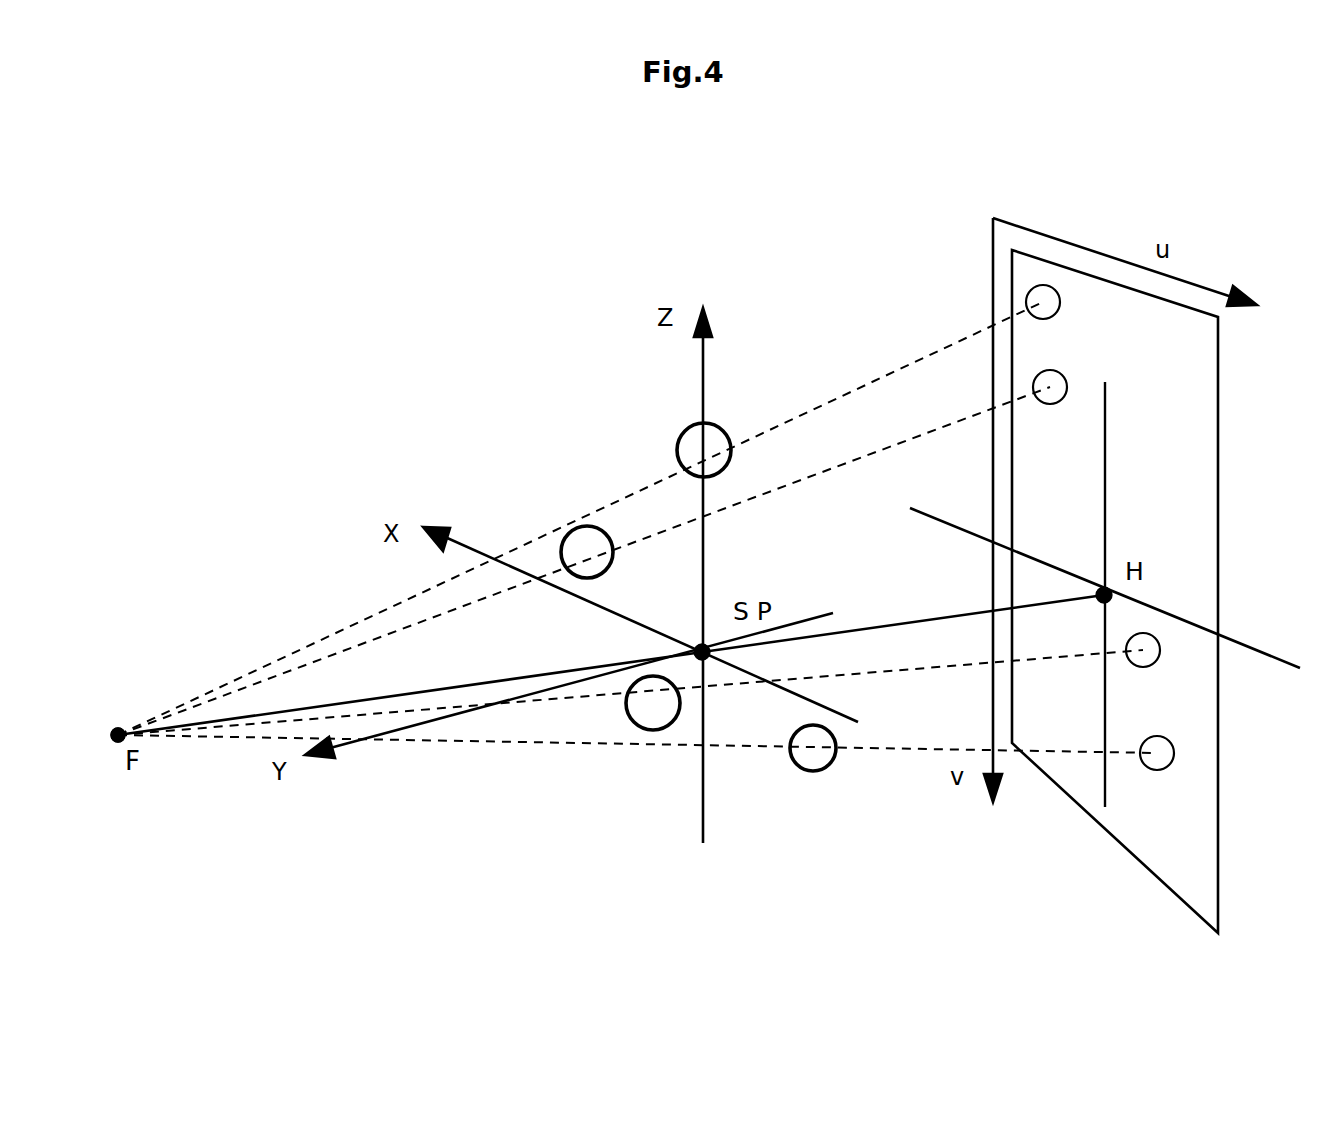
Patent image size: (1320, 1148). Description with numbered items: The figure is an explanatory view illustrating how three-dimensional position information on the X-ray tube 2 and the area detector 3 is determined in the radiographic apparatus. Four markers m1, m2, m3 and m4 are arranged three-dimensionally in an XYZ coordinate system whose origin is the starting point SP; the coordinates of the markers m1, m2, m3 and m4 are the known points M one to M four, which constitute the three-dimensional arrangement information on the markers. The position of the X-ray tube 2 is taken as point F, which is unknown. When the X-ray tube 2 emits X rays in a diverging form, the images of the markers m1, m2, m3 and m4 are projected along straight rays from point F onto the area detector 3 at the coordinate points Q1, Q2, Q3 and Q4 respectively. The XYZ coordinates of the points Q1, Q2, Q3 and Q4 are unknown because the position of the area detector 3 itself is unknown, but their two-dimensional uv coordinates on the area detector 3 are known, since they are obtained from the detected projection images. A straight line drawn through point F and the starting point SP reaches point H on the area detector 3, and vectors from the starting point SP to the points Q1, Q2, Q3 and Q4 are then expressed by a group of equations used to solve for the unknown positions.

The X-ray tube 2 is at (119, 729).
The area detector 3 is at (1218, 380).
The marker m1 is at (590, 526).
The marker m2 is at (664, 729).
The marker m3 is at (690, 425).
The marker m4 is at (825, 770).
The projection point of marker m1 Q1 is at (1062, 404).
The projection point of marker m2 Q2 is at (1157, 668).
The projection point of marker m3 Q3 is at (1061, 318).
The projection point of marker m4 Q4 is at (1169, 772).